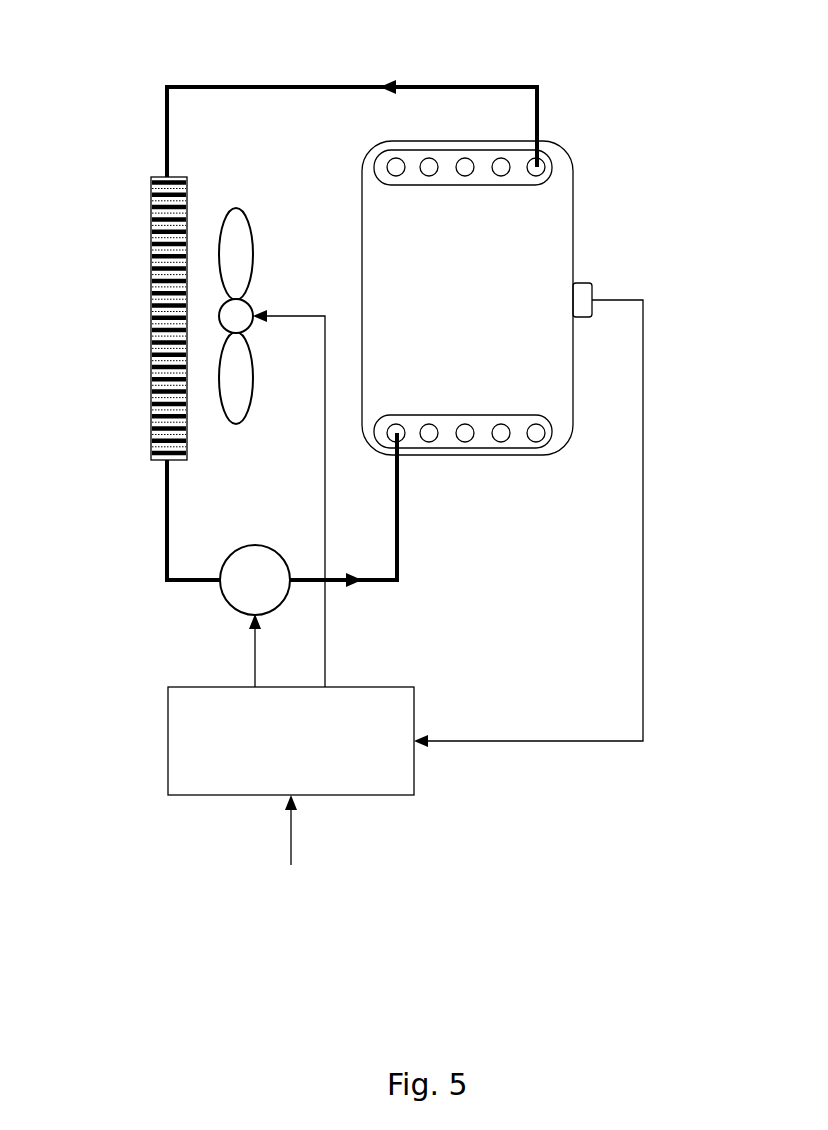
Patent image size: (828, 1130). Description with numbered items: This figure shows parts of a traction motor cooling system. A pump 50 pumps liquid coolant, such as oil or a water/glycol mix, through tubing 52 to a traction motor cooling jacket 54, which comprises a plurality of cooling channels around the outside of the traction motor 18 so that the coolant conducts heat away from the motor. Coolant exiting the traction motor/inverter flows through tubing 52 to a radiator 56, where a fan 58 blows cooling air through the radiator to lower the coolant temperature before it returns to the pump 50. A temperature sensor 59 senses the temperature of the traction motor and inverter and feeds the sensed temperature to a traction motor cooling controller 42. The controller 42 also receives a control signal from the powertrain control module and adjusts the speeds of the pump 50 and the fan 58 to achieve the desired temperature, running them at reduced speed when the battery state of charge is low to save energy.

The traction motor 18 is at (573, 200).
The traction motor cooling controller 42 is at (388, 795).
The pump 50 is at (222, 598).
The tubing 52 is at (342, 87).
The traction motor cooling jacket 54 is at (545, 448).
The radiator 56 is at (151, 312).
The fan 58 is at (253, 258).
The temperature sensor 59 is at (591, 290).